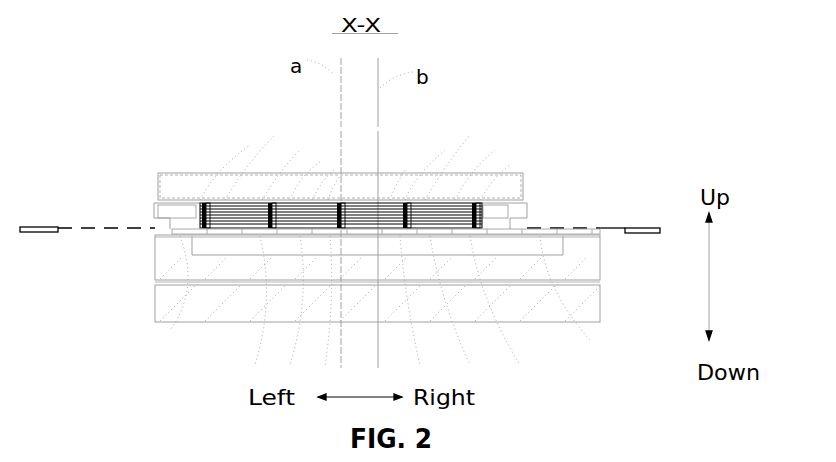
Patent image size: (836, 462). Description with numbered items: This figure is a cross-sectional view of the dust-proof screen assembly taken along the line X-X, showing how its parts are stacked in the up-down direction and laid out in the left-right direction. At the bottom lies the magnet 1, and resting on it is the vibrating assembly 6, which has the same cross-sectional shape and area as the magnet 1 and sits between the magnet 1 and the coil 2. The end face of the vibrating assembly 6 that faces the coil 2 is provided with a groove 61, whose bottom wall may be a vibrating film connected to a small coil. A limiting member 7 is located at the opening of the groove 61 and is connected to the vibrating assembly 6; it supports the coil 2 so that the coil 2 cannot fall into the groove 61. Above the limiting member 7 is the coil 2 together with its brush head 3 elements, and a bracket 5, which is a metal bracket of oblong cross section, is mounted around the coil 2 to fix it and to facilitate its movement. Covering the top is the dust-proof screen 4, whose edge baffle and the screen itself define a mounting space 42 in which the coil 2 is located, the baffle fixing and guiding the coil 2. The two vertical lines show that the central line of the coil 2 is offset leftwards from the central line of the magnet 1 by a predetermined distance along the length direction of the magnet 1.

The magnet 1 is at (600, 318).
The coil 2 is at (453, 168).
The brush head 3 is at (198, 170).
The dust-proof screen 4 is at (523, 176).
The mounting space 42 is at (160, 210).
The bracket 5 is at (500, 212).
The vibrating assembly 6 is at (600, 272).
The groove 61 is at (500, 258).
The limiting member 7 is at (600, 226).